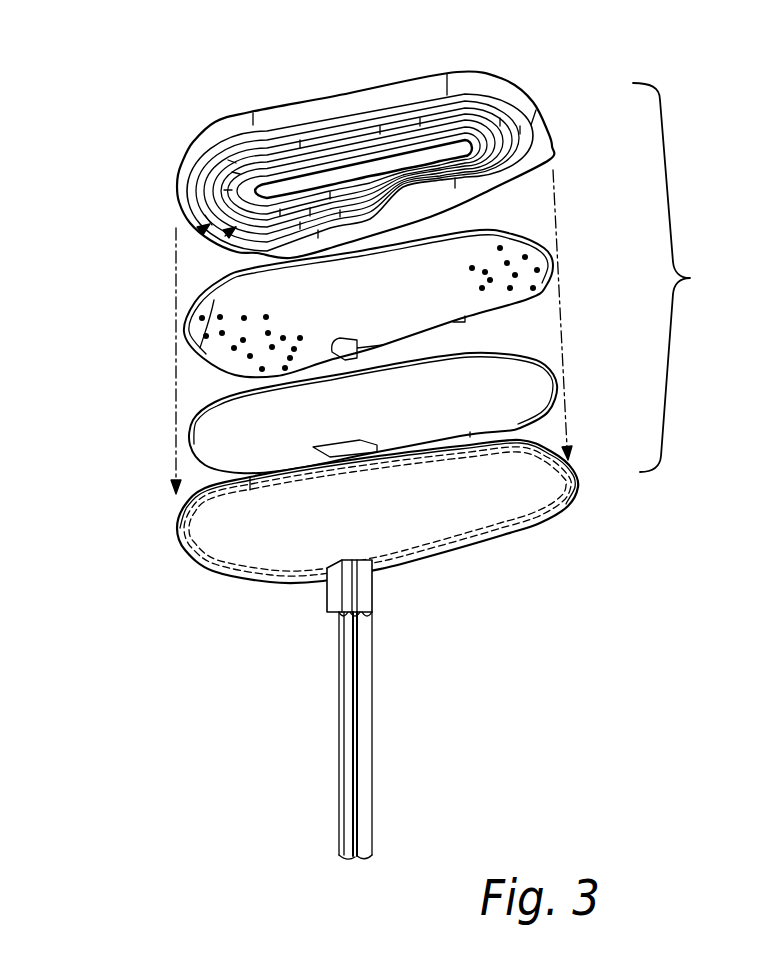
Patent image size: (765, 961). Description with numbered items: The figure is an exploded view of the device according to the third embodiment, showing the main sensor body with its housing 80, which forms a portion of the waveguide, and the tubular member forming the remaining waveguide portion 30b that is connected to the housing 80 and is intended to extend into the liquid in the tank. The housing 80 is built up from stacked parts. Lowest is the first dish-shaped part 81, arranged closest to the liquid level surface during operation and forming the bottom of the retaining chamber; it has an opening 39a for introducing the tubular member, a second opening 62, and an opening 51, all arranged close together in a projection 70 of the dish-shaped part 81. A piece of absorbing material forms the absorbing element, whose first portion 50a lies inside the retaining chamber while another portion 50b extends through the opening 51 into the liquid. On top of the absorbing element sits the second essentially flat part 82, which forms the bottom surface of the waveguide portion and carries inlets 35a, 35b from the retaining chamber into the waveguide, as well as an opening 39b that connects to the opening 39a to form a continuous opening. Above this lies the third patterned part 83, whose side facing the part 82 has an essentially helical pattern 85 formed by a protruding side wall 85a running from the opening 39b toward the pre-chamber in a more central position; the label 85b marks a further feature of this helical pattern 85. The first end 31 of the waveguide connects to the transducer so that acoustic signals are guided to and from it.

The third patterned part 83 is at (224, 133).
The first end 31 is at (513, 122).
The essentially helical pattern 85 is at (205, 228).
The protruding side wall 85a is at (228, 233).
The outlet port 85b is at (230, 231).
The second essentially flat part 82 is at (187, 340).
The inlet 35a is at (217, 352).
The inlet 35b is at (220, 332).
The opening 39b is at (470, 320).
The first portion of the absorbing element 50a is at (217, 445).
The first dish-shaped part 81 is at (241, 545).
The projection 70 is at (373, 572).
The second opening 62 is at (347, 587).
The opening 51 is at (330, 620).
The opening 39a is at (365, 615).
The remaining portion of the waveguide 30b is at (366, 778).
The portion of the absorbing element 50b is at (340, 820).
The housing 80 is at (681, 277).